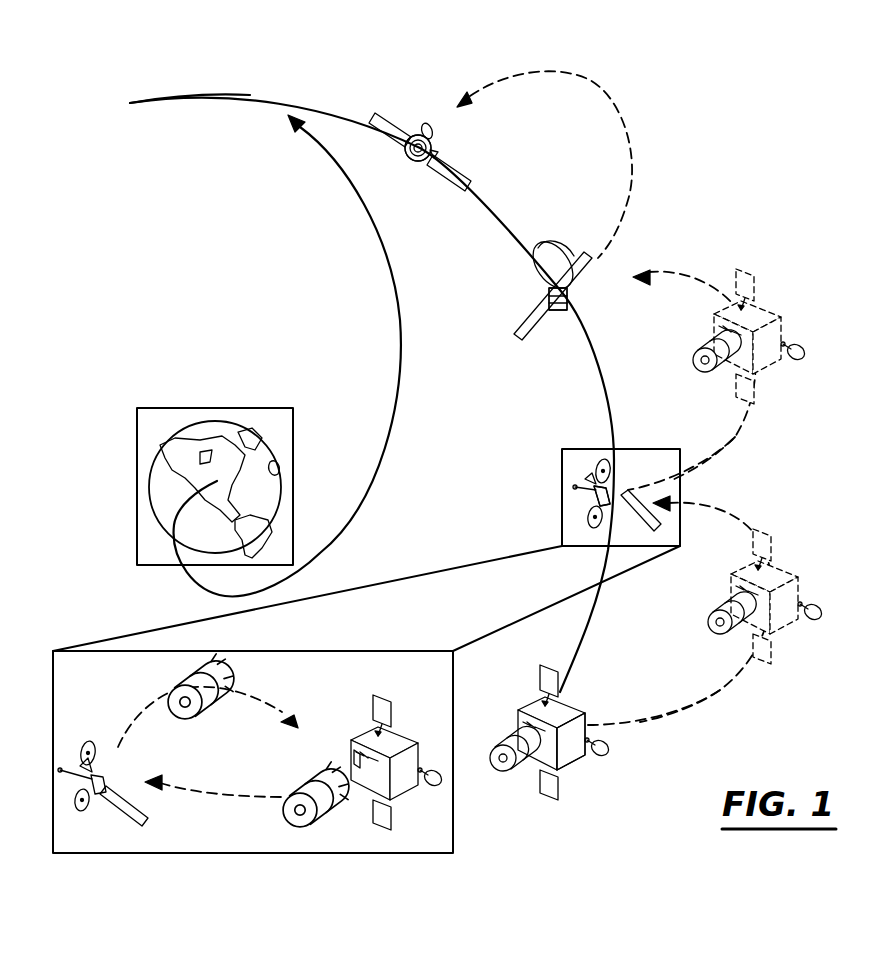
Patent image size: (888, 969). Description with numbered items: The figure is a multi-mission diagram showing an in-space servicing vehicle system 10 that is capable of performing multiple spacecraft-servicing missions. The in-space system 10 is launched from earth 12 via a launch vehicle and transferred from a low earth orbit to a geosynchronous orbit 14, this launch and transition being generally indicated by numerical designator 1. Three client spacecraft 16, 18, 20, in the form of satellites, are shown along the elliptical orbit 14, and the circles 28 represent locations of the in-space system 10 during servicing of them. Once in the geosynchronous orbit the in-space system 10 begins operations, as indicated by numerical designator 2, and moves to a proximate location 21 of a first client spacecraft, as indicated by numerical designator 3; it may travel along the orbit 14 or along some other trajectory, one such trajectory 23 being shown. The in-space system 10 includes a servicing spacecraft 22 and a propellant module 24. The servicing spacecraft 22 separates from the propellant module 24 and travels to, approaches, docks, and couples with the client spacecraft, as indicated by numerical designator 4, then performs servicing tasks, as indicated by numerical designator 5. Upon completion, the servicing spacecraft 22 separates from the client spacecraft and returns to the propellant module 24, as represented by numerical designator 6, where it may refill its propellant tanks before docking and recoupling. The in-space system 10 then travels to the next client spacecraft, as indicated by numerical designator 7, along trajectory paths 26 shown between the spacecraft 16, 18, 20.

The launch and orbit transition 1 is at (357, 515).
The beginning of operations 2 is at (172, 104).
The movement to proximate location 3 is at (731, 672).
The separation and docking of servicing spacecraft 4 is at (254, 796).
The servicing tasks 5 is at (102, 797).
The return to propellant module 6 is at (150, 712).
The travel to next client spacecraft 7 is at (735, 418).
The in-space servicing vehicle system 10 is at (778, 320).
The earth 12 is at (215, 425).
The geosynchronous orbit 14 is at (265, 98).
The client spacecraft 16 is at (602, 475).
The client spacecraft 18 is at (538, 327).
The client spacecraft 20 is at (456, 190).
The proximate location 21 is at (795, 545).
The servicing spacecraft 22 is at (510, 770).
The trajectory 23 is at (672, 705).
The propellant module 24 is at (567, 758).
The trajectory paths 26 is at (628, 204).
The circles 28 is at (406, 166).